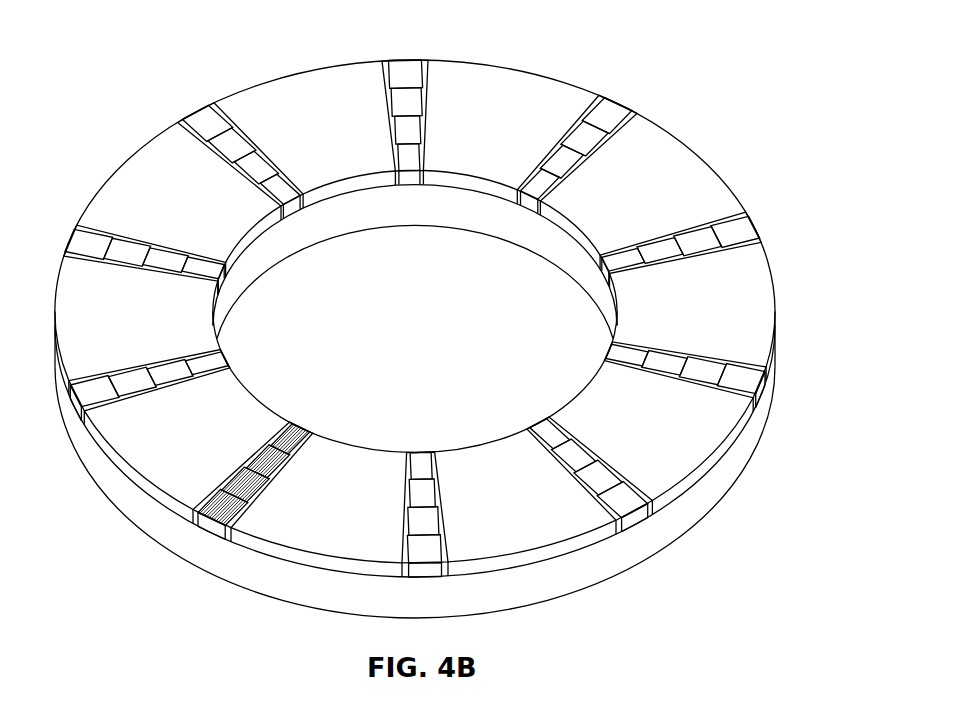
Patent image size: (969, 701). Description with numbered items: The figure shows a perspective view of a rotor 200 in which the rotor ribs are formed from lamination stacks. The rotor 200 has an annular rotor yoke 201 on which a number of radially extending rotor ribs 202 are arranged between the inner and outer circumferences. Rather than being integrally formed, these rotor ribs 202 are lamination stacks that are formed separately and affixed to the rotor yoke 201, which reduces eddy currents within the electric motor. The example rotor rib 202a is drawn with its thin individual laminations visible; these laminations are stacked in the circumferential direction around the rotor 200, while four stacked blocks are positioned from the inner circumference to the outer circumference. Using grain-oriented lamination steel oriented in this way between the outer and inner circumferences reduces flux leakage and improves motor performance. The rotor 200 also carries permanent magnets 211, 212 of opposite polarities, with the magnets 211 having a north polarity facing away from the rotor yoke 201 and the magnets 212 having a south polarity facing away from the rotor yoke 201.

The rotor 200 is at (196, 50).
The rotor yoke 201 is at (193, 565).
The rotor ribs 202 is at (213, 103).
The rotor rib 202a is at (307, 435).
The magnets 211 is at (303, 70).
The magnets 212 is at (120, 163).